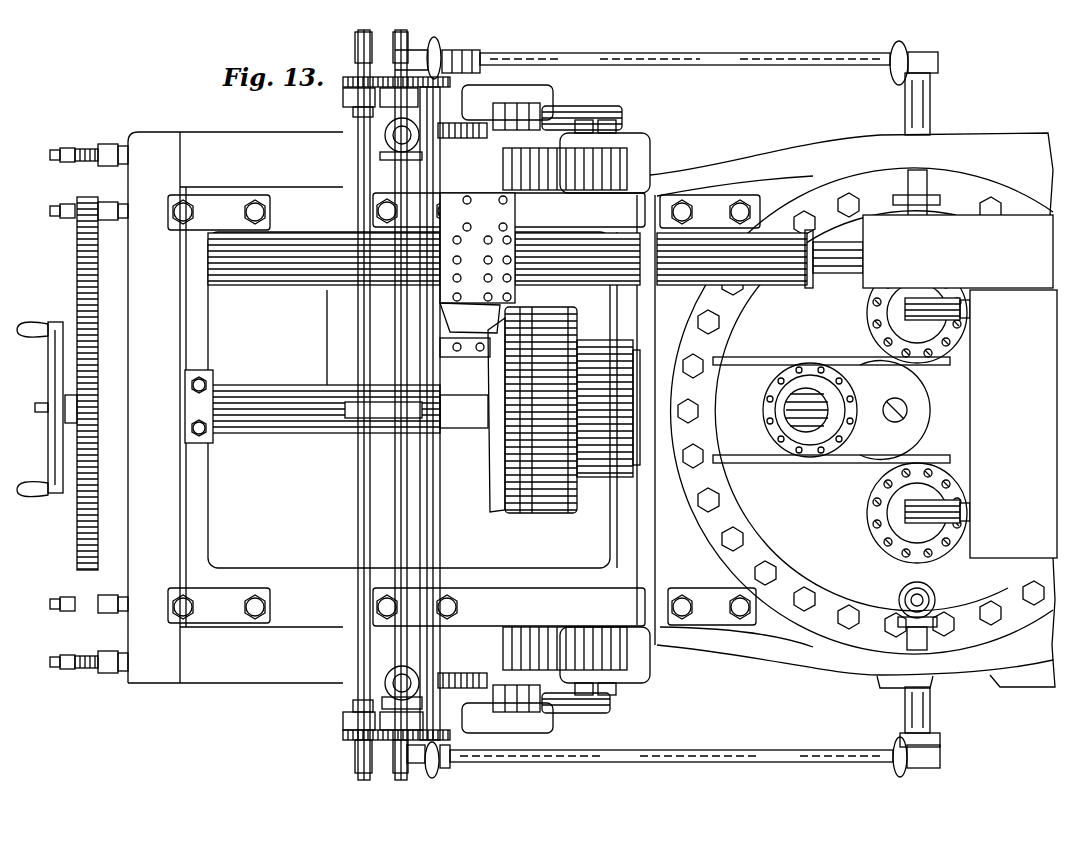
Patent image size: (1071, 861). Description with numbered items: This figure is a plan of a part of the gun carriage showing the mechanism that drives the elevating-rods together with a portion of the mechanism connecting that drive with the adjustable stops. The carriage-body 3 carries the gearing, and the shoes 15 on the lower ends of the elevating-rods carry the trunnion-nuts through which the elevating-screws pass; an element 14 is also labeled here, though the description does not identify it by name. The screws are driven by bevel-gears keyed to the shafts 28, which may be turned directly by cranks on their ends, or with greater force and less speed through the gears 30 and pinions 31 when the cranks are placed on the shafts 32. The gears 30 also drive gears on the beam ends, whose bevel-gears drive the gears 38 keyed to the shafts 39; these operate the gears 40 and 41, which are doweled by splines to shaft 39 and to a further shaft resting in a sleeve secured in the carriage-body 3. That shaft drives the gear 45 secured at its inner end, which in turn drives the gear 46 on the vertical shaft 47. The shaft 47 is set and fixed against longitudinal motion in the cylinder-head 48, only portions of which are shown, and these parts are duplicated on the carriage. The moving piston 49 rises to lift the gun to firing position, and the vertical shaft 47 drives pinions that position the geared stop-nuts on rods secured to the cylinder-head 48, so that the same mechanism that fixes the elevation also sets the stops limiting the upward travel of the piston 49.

The carriage-body 3 is at (591, 410).
The cylinder 14 is at (573, 106).
The shoe 15 is at (507, 409).
The shaft 28 is at (405, 782).
The gear 30 is at (463, 721).
The pinion 31 is at (355, 735).
The shaft 32 is at (358, 780).
The gear 38 is at (440, 775).
The shaft 39 is at (703, 750).
The gear 40 is at (893, 770).
The gear 41 is at (935, 742).
The gear 45 is at (905, 620).
The gear 46 is at (905, 592).
The vertical shaft 47 is at (935, 600).
The cylinder-head 48 is at (831, 443).
The piston 49 is at (775, 572).